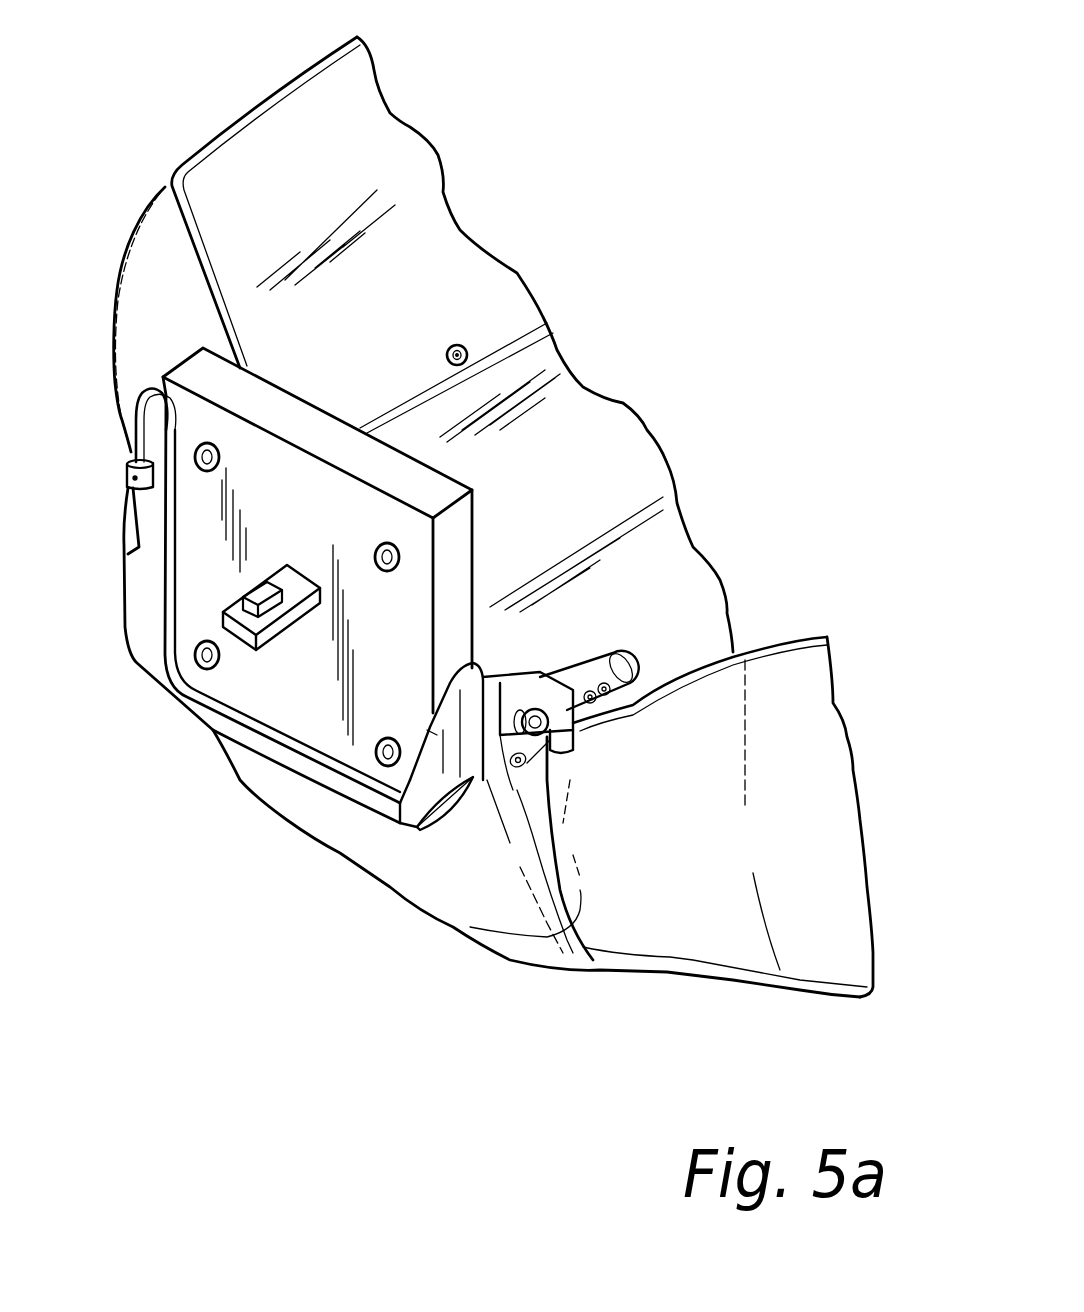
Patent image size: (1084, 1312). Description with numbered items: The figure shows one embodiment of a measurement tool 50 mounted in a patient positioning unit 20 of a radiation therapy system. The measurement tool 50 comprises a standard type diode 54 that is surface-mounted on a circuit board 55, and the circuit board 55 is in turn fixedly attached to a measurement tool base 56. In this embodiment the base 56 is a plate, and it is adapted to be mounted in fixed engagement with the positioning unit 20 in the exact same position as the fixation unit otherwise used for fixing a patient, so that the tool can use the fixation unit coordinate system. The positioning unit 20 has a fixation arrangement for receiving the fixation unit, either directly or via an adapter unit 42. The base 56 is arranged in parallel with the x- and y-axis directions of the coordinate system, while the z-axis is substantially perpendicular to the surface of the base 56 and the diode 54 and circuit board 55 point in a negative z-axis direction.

The patient positioning unit 20 is at (487, 877).
The adapter unit 42 is at (478, 663).
The measurement tool 50 is at (339, 405).
The diode 54 is at (257, 593).
The circuit board 55 is at (290, 640).
The measurement tool base 56 is at (257, 393).